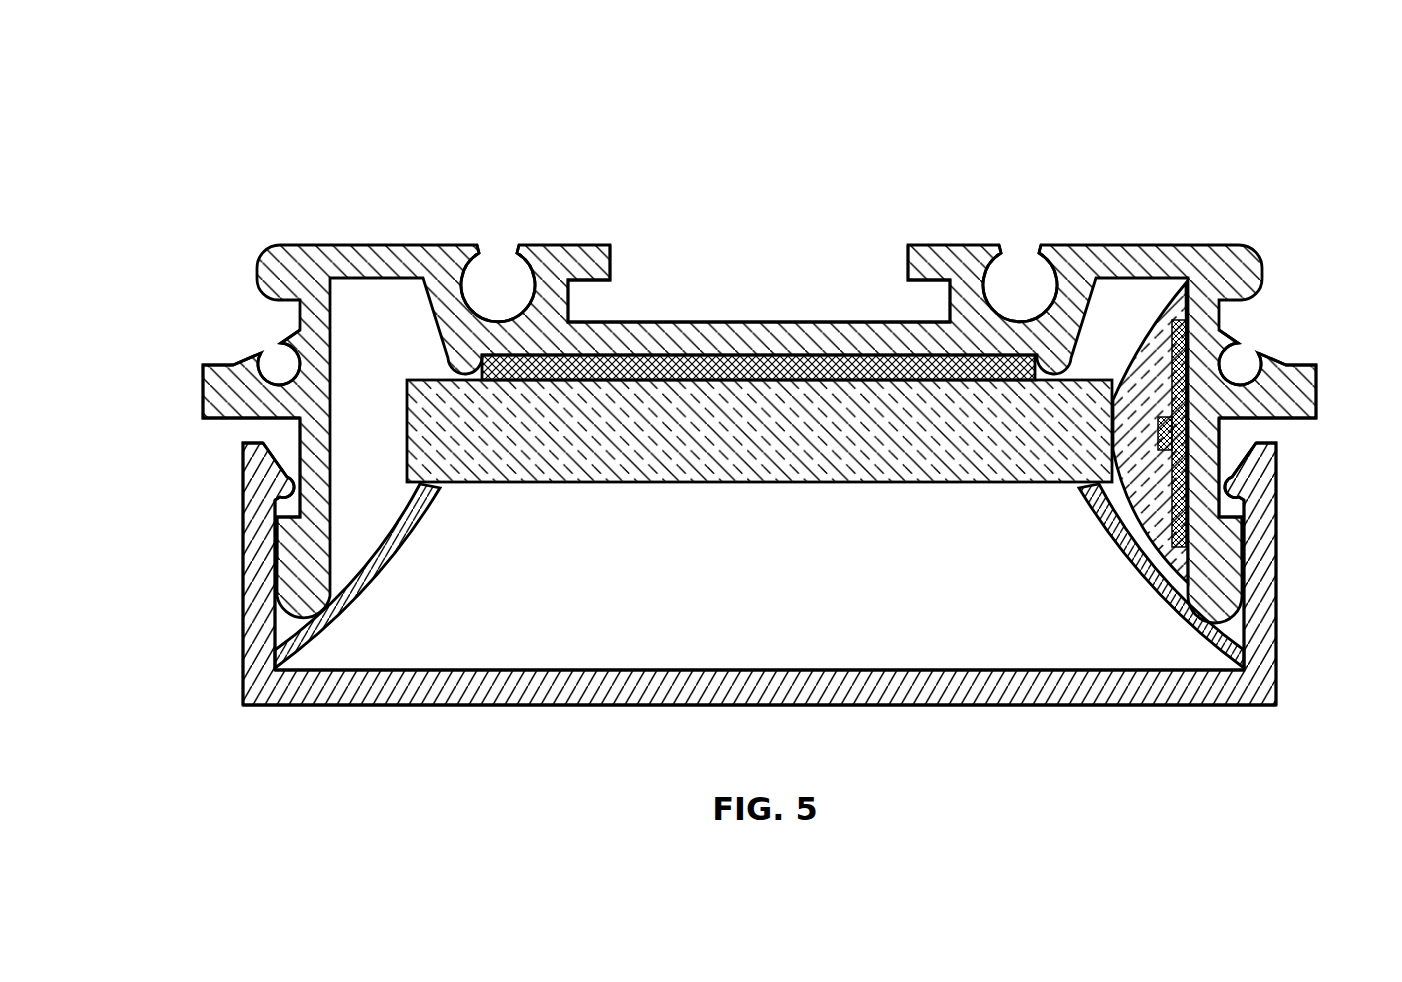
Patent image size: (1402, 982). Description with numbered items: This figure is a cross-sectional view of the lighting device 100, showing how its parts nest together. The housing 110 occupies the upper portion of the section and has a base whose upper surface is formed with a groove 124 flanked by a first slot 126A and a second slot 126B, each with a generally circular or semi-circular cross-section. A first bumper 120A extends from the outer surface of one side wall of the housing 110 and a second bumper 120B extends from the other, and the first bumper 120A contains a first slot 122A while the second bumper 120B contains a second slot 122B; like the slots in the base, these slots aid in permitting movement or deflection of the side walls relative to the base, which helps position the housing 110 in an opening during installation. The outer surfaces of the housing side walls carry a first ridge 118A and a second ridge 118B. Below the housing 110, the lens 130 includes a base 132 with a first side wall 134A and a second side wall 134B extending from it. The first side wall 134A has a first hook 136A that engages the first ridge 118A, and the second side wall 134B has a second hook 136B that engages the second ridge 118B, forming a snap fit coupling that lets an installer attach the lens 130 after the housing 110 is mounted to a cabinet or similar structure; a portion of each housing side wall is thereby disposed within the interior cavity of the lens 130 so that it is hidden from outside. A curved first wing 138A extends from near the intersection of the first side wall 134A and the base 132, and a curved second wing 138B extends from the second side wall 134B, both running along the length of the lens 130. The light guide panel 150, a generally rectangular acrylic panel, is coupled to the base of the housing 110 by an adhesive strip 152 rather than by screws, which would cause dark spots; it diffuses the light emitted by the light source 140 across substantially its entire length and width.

The lighting device 100 is at (206, 87).
The housing 110 is at (208, 303).
The first ridge 118A is at (278, 502).
The second ridge 118B is at (1241, 503).
The first bumper 120A is at (213, 392).
The second bumper 120B is at (1306, 392).
The first slot 122A is at (264, 344).
The second slot 122B is at (1254, 344).
The groove 124 is at (711, 262).
The first slot 126A is at (498, 262).
The second slot 126B is at (1018, 262).
The lens 130 is at (208, 698).
The base 132 is at (455, 693).
The first side wall 134A is at (252, 601).
The second side wall 134B is at (1267, 601).
The first hook 136A is at (253, 462).
The second hook 136B is at (1266, 462).
The first wing 138A is at (380, 585).
The second wing 138B is at (1135, 585).
The light source 140 is at (1148, 337).
The light guide panel 150 is at (610, 462).
The adhesive strip 152 is at (782, 352).